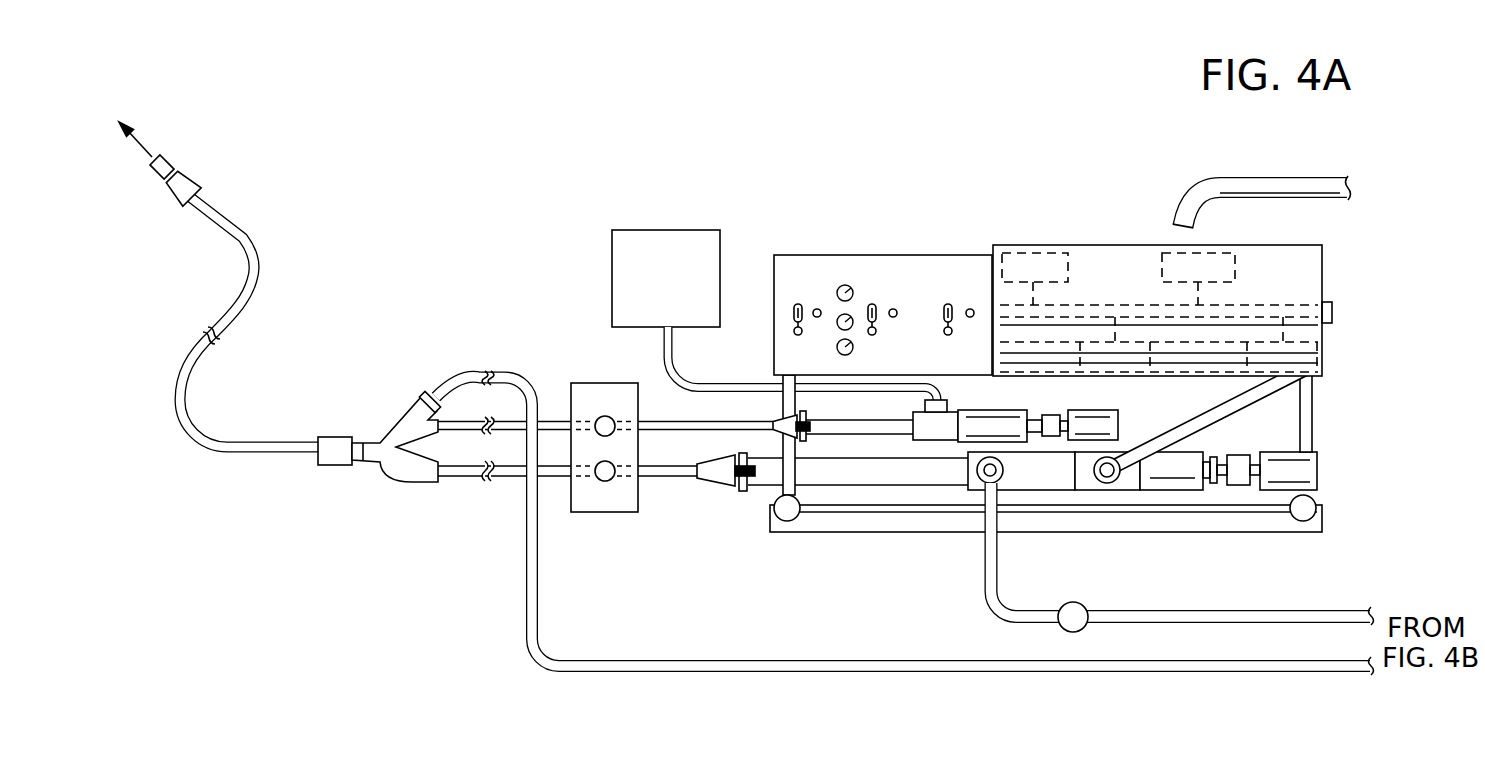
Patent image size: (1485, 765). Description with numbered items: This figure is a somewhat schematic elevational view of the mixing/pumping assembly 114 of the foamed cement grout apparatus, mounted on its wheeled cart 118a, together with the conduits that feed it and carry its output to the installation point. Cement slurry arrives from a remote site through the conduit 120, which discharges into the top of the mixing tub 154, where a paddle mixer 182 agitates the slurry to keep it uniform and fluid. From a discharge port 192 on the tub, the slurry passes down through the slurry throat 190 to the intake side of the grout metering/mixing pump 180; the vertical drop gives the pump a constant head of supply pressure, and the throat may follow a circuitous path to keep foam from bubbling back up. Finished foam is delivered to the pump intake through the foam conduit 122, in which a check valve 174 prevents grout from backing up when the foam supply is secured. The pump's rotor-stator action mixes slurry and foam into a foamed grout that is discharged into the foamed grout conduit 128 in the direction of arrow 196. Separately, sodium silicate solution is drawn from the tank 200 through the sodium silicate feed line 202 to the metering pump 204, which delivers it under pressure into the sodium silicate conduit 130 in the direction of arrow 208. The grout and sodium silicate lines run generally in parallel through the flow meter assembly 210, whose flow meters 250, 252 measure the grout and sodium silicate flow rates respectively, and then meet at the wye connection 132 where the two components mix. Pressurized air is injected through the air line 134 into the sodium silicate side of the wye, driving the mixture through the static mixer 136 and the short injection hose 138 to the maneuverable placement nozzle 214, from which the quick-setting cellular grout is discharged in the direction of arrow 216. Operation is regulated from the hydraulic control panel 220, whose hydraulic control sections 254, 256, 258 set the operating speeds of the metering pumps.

The mixing/pumping assembly 114 is at (990, 165).
The cart 118a is at (843, 529).
The conduit 120 is at (1283, 186).
The foam conduit 122 is at (1212, 612).
The foamed grout conduit 128 is at (462, 480).
The sodium silicate conduit 130 is at (455, 420).
The wye connection 132 is at (392, 440).
The air line 134 is at (843, 660).
The static mixer 136 is at (320, 437).
The injection hose 138 is at (245, 238).
The mixing tub 154 is at (1302, 249).
The check valve 174 is at (1087, 604).
The grout metering/mixing pump 180 is at (1050, 472).
The paddle mixer 182 is at (1075, 268).
The slurry throat 190 is at (1308, 401).
The discharge port 192 is at (1318, 362).
The arrow 196 is at (768, 476).
The tank 200 is at (699, 284).
The sodium silicate feed line 202 is at (660, 350).
The metering pump 204 is at (950, 412).
The arrow 208 is at (800, 412).
The flow meter assembly 210 is at (620, 518).
The placement nozzle 214 is at (170, 173).
The arrow 216 is at (145, 140).
The hydraulic control panel 220 is at (980, 245).
The flow meter 250 is at (604, 483).
The flow meter 252 is at (598, 418).
The hydraulic control section 254 is at (958, 288).
The hydraulic control section 256 is at (884, 288).
The hydraulic control section 258 is at (806, 288).